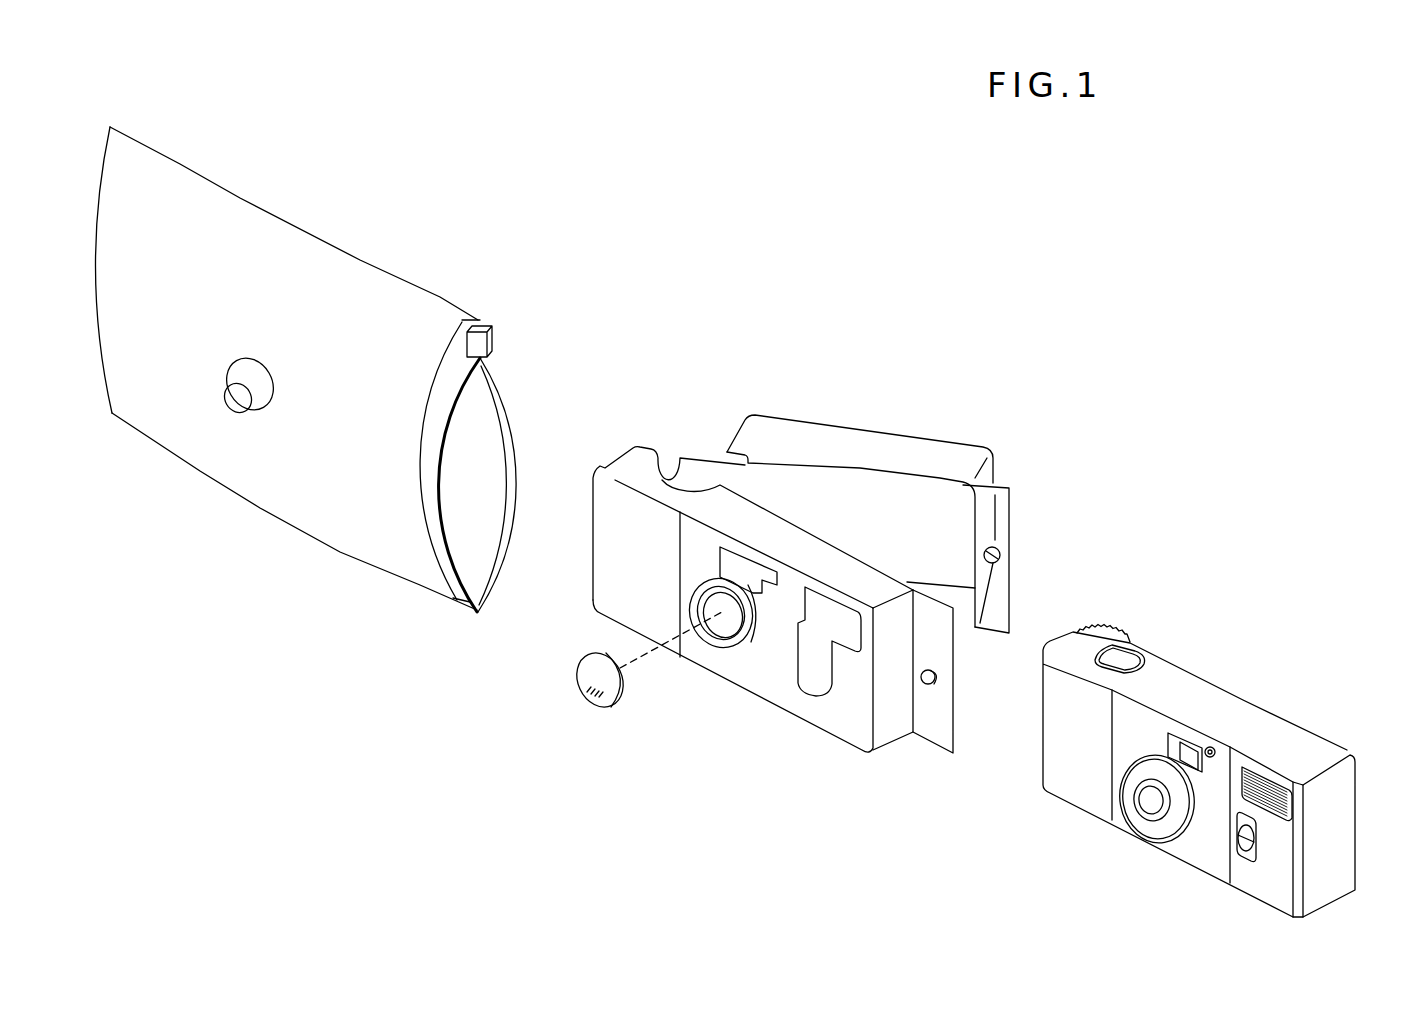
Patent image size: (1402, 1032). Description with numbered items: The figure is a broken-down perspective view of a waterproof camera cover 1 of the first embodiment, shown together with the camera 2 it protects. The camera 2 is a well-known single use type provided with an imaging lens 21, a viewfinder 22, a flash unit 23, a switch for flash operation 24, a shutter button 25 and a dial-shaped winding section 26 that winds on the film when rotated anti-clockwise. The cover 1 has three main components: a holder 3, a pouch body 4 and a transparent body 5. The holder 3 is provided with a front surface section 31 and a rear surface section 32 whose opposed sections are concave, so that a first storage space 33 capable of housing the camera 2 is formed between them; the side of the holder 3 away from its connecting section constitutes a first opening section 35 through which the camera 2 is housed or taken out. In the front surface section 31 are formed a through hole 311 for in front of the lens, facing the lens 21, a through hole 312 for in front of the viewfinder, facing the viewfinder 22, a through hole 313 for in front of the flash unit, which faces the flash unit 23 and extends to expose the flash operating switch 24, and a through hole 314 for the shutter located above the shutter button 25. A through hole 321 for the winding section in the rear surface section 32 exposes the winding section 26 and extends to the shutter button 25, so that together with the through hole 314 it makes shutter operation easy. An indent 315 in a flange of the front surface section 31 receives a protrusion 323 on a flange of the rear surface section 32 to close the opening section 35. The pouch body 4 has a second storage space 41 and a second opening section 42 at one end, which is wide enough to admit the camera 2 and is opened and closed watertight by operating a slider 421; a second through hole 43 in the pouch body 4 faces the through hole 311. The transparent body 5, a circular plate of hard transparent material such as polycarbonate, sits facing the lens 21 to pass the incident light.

The cover 1 is at (613, 213).
The camera 2 is at (1252, 608).
The holder 3 is at (744, 292).
The pouch body 4 is at (562, 270).
The transparent body 5 is at (632, 715).
The imaging lens 21 is at (1150, 800).
The viewfinder 22 is at (1186, 743).
The flash unit 23 is at (1272, 790).
The switch for flash operation 24 is at (1237, 850).
The shutter button 25 is at (1130, 662).
The winding section 26 is at (1105, 628).
The front surface section 31 is at (593, 560).
The rear surface section 32 is at (982, 442).
The first storage space 33 is at (867, 492).
The first opening section 35 is at (1018, 540).
The second storage space 41 is at (503, 485).
The second opening section 42 is at (488, 450).
The second through hole 43 is at (233, 395).
The through hole for in front of the lens 311 is at (720, 628).
The through hole for in front of the viewfinder 312 is at (722, 558).
The through hole for in front of the flash unit 313 is at (850, 625).
The through hole for the shutter 314 is at (668, 460).
The indent 315 is at (937, 683).
The through hole for the winding section 321 is at (732, 440).
The protrusion 323 is at (1000, 561).
The slider 421 is at (495, 338).